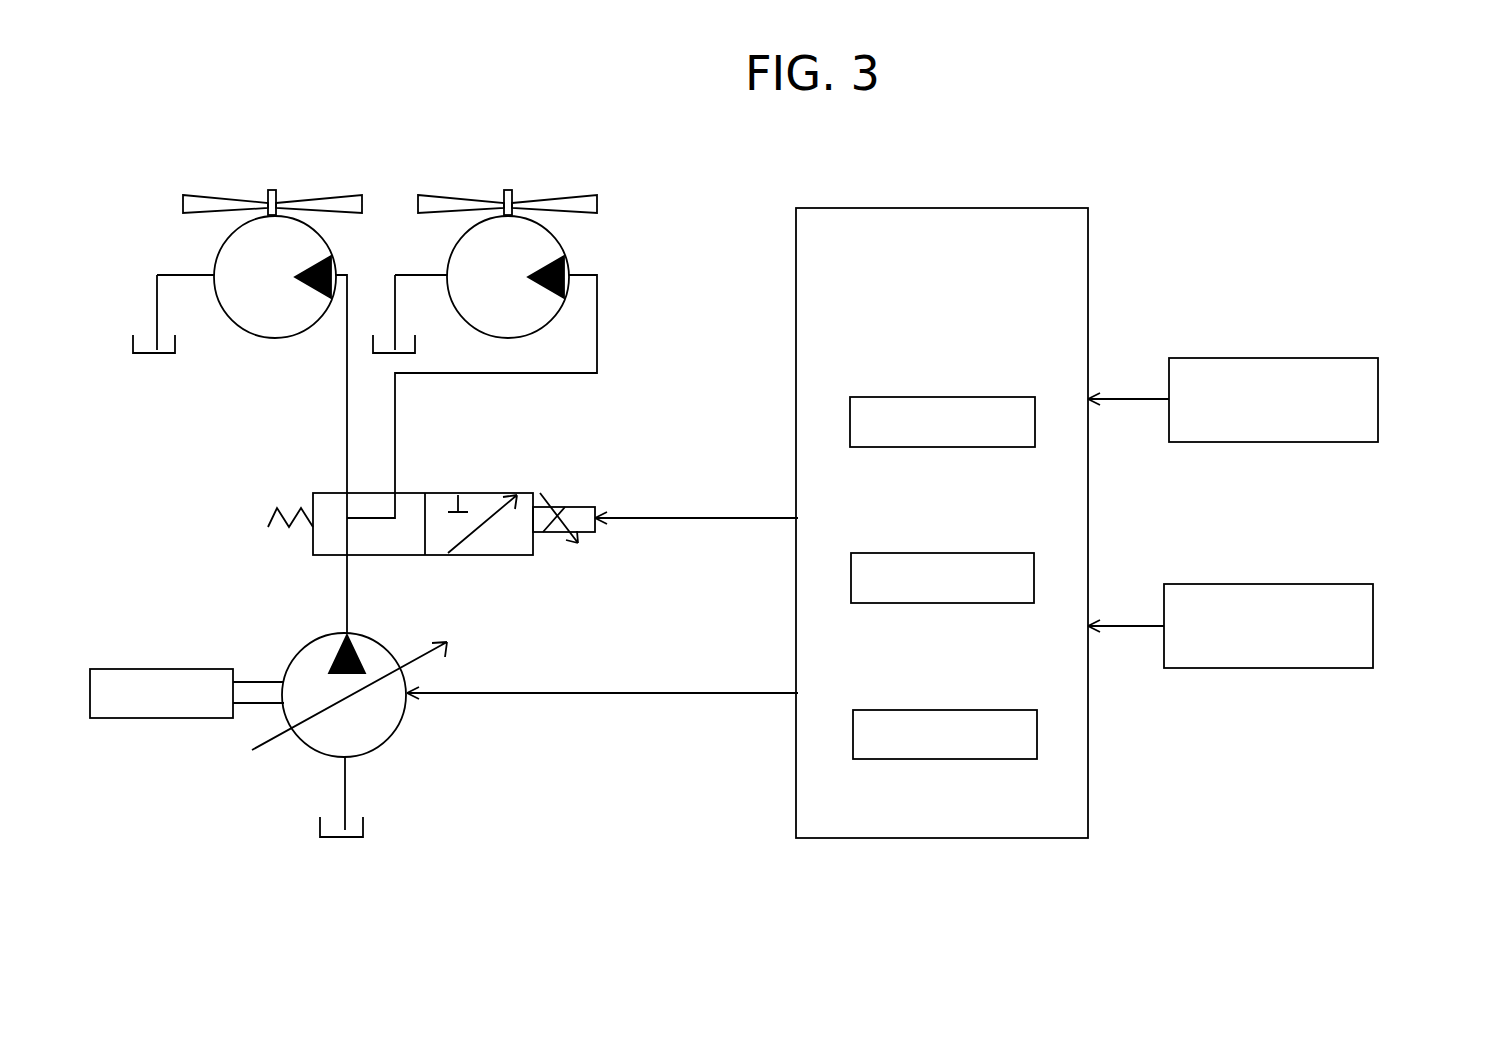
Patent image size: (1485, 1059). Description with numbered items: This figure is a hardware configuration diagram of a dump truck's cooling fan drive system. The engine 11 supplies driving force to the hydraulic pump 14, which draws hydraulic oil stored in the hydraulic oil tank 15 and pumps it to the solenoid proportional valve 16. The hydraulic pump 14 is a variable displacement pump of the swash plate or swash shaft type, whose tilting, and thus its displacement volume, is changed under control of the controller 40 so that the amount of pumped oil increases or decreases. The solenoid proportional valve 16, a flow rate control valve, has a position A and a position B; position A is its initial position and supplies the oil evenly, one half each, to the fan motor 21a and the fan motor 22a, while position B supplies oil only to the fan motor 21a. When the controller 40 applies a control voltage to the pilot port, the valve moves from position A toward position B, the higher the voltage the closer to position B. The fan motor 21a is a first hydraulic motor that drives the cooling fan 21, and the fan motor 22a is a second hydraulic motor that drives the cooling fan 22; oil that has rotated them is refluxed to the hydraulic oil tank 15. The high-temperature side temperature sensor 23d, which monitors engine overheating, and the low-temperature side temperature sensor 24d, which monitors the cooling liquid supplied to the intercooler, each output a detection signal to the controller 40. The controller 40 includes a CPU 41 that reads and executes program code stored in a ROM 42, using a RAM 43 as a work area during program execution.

The engine 11 is at (137, 669).
The hydraulic pump 14 is at (398, 727).
The hydraulic oil tank 15 is at (176, 336).
The solenoid proportional valve 16 is at (522, 466).
The cooling fan 21 is at (556, 190).
The fan motor 21a is at (560, 245).
The cooling fan 22 is at (316, 190).
The fan motor 22a is at (325, 245).
The high-temperature side temperature sensor 23d is at (1378, 388).
The low-temperature side temperature sensor 24d is at (1373, 613).
The controller 40 is at (1033, 208).
The CPU 41 is at (973, 397).
The ROM 42 is at (970, 553).
The RAM 43 is at (955, 710).